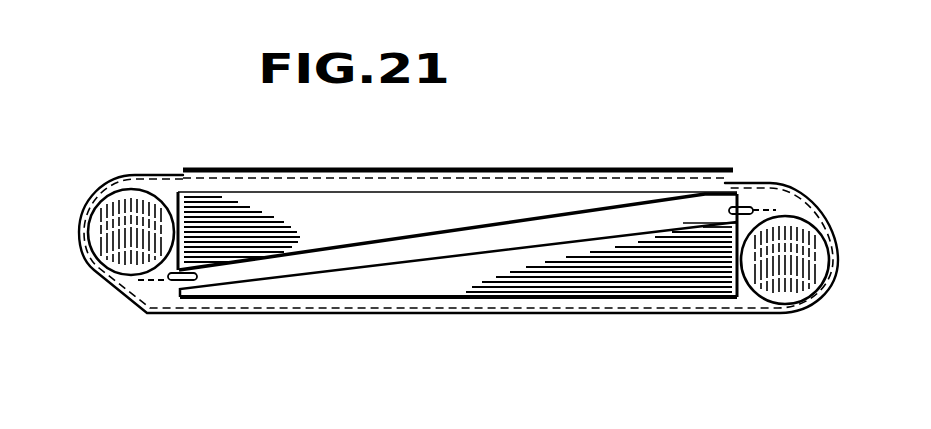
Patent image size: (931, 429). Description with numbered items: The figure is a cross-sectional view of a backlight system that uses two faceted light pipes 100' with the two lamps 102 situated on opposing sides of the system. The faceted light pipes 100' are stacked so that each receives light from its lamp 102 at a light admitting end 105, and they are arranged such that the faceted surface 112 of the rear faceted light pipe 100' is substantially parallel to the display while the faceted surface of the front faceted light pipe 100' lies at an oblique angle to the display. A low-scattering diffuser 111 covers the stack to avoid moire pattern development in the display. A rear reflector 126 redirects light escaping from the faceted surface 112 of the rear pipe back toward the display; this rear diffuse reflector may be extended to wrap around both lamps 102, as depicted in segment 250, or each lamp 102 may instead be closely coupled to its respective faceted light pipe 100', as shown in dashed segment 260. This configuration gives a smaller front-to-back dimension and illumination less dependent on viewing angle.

The faceted light pipe 100' is at (457, 238).
The lamp 102 is at (131, 211).
The light admitting end 105 is at (200, 203).
The low-scattering diffuser 111 is at (517, 170).
The faceted surface 112 is at (403, 297).
The rear reflector 126 is at (327, 316).
The reflector segment 250 is at (766, 183).
The dashed segment 260 is at (790, 197).